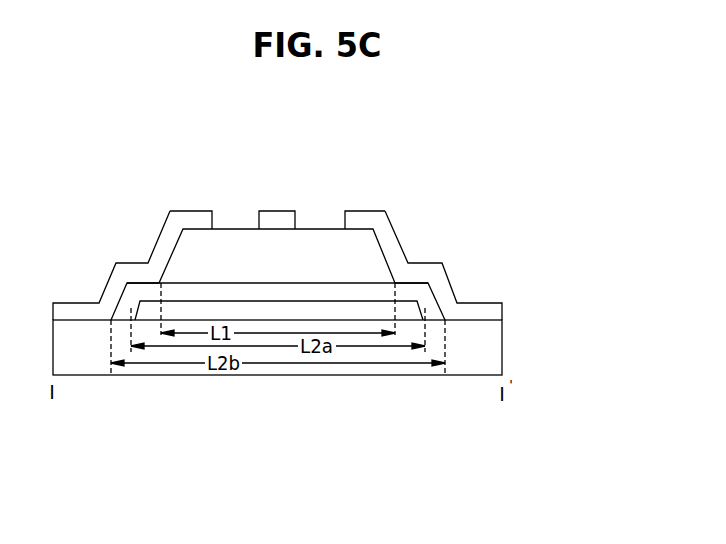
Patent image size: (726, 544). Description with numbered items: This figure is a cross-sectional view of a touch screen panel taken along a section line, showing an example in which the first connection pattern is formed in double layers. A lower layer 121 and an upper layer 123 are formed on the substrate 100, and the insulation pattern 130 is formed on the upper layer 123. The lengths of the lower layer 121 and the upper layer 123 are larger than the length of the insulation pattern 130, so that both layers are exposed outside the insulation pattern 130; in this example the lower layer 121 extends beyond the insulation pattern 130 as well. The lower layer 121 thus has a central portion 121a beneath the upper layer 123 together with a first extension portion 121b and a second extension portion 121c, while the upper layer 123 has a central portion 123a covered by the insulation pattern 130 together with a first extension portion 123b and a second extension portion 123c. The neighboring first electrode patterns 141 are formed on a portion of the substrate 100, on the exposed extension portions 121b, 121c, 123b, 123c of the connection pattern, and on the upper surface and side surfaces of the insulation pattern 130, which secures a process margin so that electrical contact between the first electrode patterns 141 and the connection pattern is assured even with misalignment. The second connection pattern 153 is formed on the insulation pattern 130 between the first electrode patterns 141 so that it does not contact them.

The substrate 100 is at (485, 351).
The lower layer 121 is at (422, 432).
The lower layer central portion 121a is at (253, 310).
The first extension portion of the lower layer 121b is at (146, 312).
The second extension portion of the lower layer 121c is at (408, 312).
The upper layer 123 is at (460, 483).
The upper layer central portion 123a is at (287, 292).
The first extension portion of the upper layer 123b is at (123, 313).
The second extension portion of the upper layer 123c is at (433, 313).
The insulation pattern 130 is at (372, 263).
The first electrode pattern 141 is at (192, 217).
The second connection pattern 153 is at (278, 215).